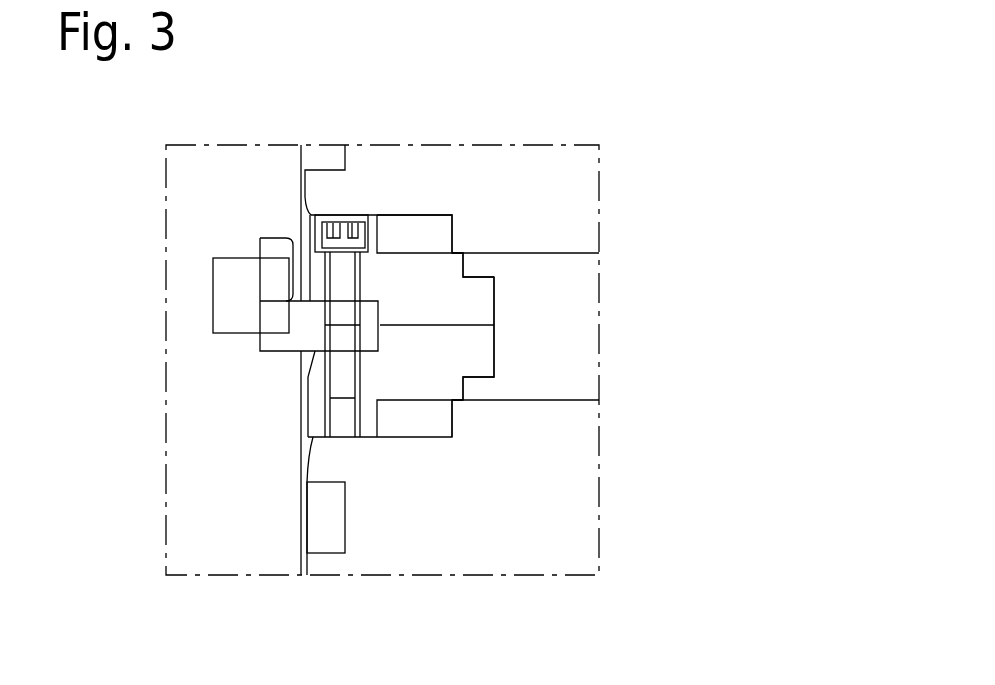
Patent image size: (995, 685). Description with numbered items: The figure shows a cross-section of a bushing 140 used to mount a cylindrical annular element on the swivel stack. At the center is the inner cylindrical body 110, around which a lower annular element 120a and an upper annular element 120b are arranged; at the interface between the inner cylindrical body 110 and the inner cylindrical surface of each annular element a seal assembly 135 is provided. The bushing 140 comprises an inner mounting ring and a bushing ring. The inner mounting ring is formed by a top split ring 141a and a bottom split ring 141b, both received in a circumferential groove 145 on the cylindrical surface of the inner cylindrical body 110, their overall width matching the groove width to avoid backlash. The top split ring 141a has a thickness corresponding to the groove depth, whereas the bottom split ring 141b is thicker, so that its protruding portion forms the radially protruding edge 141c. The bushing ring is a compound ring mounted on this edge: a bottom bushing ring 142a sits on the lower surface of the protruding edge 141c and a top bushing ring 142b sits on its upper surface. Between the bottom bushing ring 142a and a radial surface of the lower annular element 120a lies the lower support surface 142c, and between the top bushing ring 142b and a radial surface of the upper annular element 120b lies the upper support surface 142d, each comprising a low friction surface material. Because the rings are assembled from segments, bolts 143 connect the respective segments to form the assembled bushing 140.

The inner cylindrical body 110 is at (223, 482).
The lower annular element 120a is at (460, 530).
The upper annular element 120b is at (462, 179).
The seal assembly 135 is at (320, 537).
The bushing 140 is at (677, 323).
The top split ring 141a is at (290, 253).
The bottom split ring 141b is at (280, 342).
The radially protruding edge 141c is at (368, 353).
The bottom bushing ring 142a is at (463, 353).
The top bushing ring 142b is at (478, 300).
The lower support surface 142c is at (437, 420).
The upper support surface 142d is at (437, 228).
The bolts 143 is at (348, 245).
The circumferential groove 145 is at (285, 239).